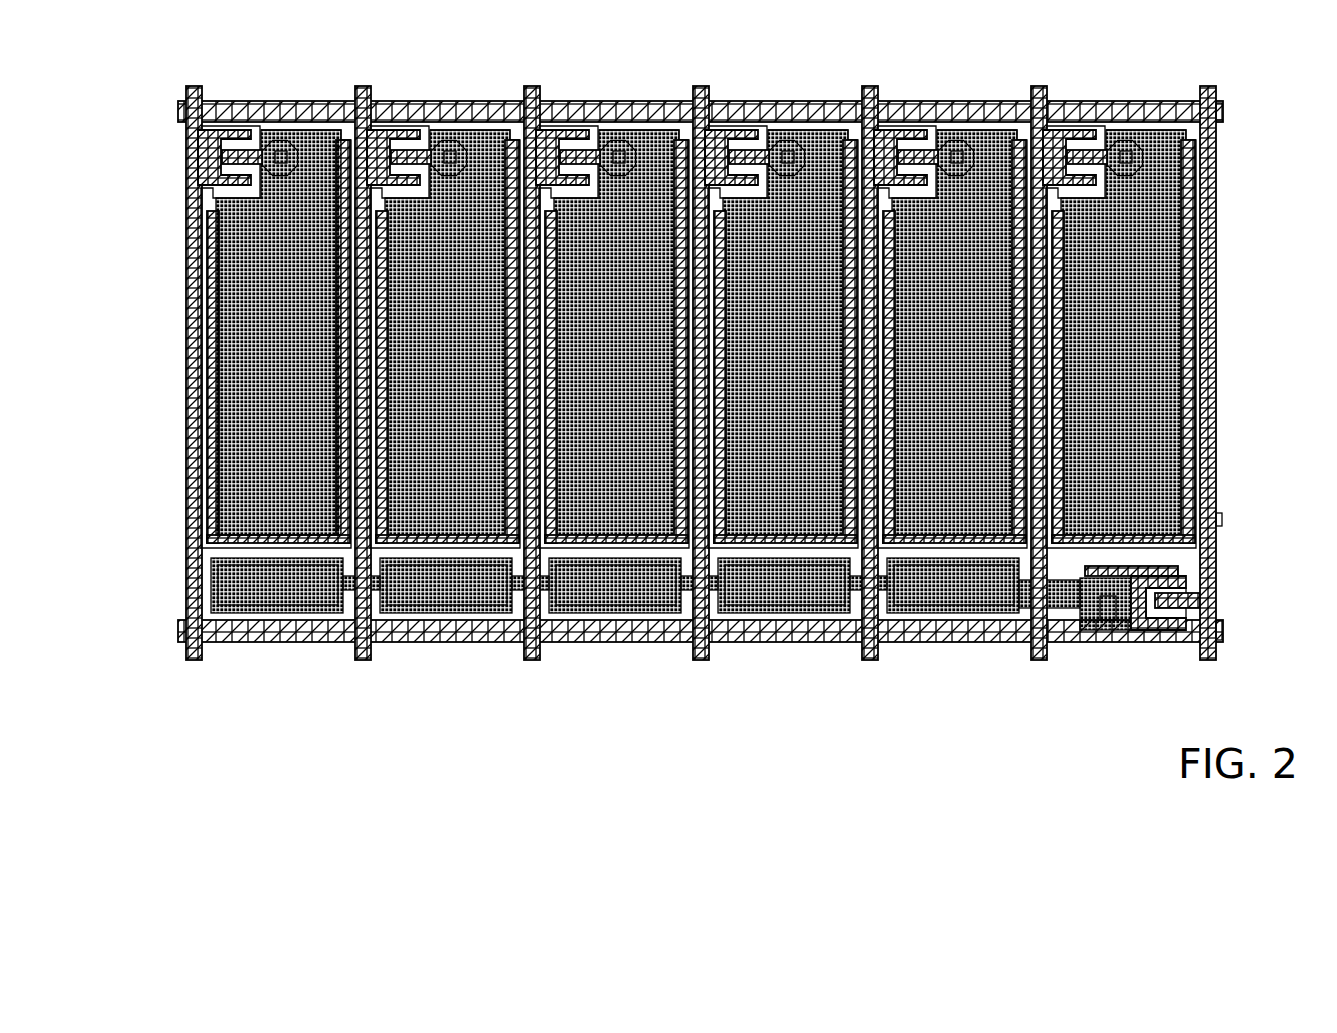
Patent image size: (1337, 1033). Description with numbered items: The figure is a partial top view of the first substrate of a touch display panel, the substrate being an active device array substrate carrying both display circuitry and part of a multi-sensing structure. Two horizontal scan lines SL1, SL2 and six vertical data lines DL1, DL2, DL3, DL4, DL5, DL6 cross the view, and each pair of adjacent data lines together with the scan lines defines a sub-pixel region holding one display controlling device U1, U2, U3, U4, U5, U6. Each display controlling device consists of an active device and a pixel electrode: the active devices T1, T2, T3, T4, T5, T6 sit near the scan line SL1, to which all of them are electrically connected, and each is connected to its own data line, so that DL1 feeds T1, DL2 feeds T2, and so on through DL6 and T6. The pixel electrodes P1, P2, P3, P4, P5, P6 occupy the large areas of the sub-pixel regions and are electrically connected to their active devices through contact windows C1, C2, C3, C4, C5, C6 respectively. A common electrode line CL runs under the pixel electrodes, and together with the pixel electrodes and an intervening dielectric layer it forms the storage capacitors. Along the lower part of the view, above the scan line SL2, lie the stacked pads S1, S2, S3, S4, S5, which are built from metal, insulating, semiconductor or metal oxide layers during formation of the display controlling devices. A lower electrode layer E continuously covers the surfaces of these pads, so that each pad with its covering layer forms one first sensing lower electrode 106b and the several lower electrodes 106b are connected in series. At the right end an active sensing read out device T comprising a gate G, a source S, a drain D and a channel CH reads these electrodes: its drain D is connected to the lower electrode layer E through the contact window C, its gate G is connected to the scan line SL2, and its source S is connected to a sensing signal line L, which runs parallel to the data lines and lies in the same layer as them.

The data line DL1 is at (187, 76).
The data line DL2 is at (362, 345).
The data line DL3 is at (531, 345).
The data line DL4 is at (700, 345).
The data line DL5 is at (869, 345).
The data line DL6 is at (1038, 345).
The scan line SL1 is at (170, 102).
The scan line SL2 is at (170, 622).
The common electrode line CL is at (203, 236).
The sensing signal line L is at (1200, 76).
The display controlling device U1 is at (274, 278).
The display controlling device U2 is at (443, 278).
The display controlling device U3 is at (612, 278).
The display controlling device U4 is at (781, 278).
The display controlling device U5 is at (950, 278).
The display controlling device U6 is at (1119, 278).
The active device T1 is at (230, 115).
The active device T2 is at (399, 115).
The active device T3 is at (568, 115).
The active device T4 is at (737, 115).
The active device T5 is at (906, 115).
The active device T6 is at (1075, 115).
The pixel electrode P1 is at (277, 126).
The pixel electrode P2 is at (447, 290).
The pixel electrode P3 is at (616, 290).
The pixel electrode P4 is at (785, 290).
The pixel electrode P5 is at (954, 290).
The pixel electrode P6 is at (1123, 290).
The contact window C1 is at (275, 156).
The contact window C2 is at (455, 195).
The contact window C3 is at (624, 195).
The contact window C4 is at (793, 195).
The contact window C5 is at (962, 195).
The contact window C6 is at (1131, 195).
The stacked pad S1 is at (257, 604).
The stacked pad S2 is at (464, 626).
The stacked pad S3 is at (633, 626).
The stacked pad S4 is at (802, 626).
The stacked pad S5 is at (953, 626).
The first sensing lower electrode 106b is at (615, 667).
The lower electrode layer E is at (993, 603).
The contact window C is at (1102, 622).
The active sensing read out device T is at (1142, 657).
The drain D is at (1187, 698).
The channel CH is at (1152, 612).
The gate G is at (1172, 610).
The source S is at (1185, 610).